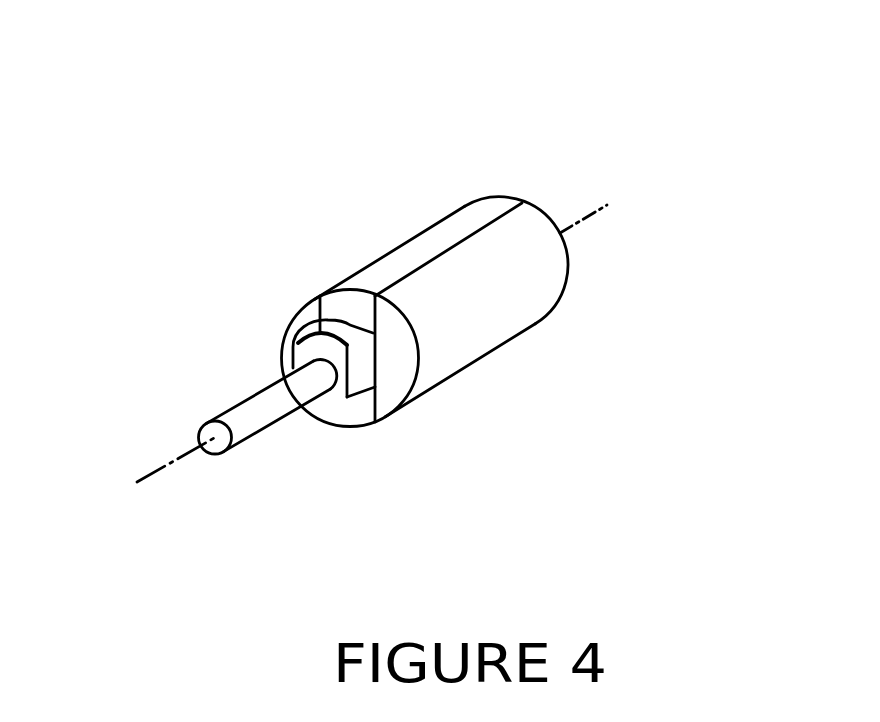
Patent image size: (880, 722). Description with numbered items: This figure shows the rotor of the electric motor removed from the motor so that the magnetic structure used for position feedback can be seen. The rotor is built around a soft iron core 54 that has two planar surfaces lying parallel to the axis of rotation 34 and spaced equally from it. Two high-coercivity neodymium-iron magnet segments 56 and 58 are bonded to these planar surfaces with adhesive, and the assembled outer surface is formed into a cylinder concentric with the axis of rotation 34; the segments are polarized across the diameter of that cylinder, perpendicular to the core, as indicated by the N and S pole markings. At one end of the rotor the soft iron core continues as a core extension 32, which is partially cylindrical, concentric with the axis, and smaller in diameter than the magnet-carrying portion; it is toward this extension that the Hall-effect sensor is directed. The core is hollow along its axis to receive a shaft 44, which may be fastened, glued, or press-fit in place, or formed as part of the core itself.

The core extension 32 is at (340, 388).
The axis of rotation 34 is at (607, 205).
The shaft 44 is at (260, 408).
The soft iron core 54 is at (410, 258).
The magnet segment 56 is at (303, 323).
The magnet segment 58 is at (498, 307).